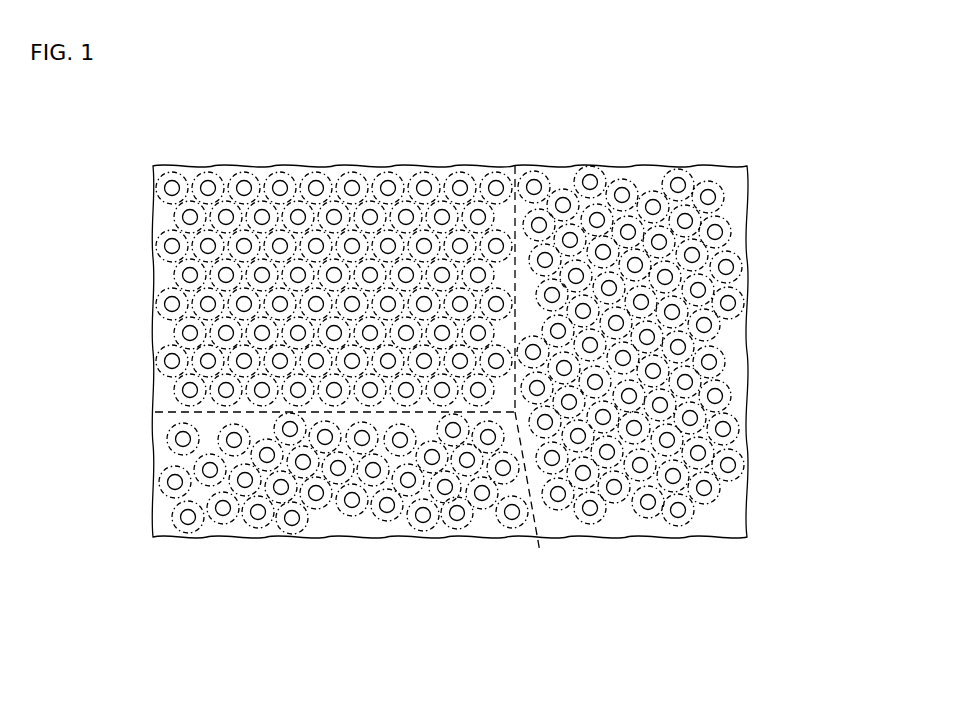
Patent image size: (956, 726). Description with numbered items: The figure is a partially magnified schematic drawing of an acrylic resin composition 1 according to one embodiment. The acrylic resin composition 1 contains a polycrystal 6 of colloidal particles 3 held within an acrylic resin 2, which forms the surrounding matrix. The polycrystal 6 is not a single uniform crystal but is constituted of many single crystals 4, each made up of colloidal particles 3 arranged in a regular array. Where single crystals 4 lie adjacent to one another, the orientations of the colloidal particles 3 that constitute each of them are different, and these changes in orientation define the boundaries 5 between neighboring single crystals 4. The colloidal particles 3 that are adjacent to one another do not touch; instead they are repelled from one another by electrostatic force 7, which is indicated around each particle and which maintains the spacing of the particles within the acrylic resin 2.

The acrylic resin composition 1 is at (759, 164).
The acrylic resin 2 is at (226, 180).
The colloidal particles 3 is at (165, 243).
The single crystals 4 is at (148, 330).
The boundaries 5 is at (510, 215).
The polycrystal 6 is at (74, 617).
The electrostatic force 7 is at (152, 172).